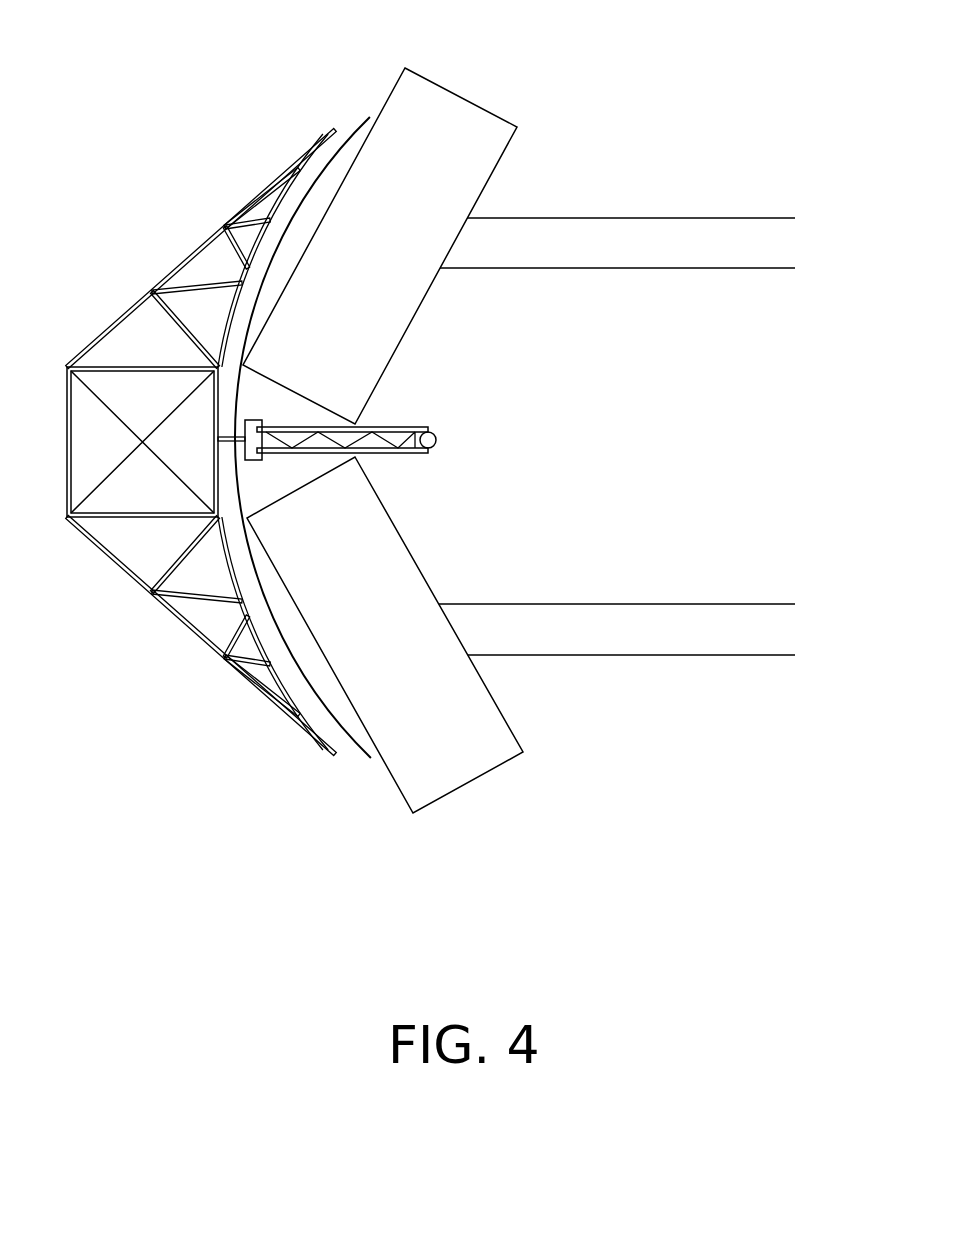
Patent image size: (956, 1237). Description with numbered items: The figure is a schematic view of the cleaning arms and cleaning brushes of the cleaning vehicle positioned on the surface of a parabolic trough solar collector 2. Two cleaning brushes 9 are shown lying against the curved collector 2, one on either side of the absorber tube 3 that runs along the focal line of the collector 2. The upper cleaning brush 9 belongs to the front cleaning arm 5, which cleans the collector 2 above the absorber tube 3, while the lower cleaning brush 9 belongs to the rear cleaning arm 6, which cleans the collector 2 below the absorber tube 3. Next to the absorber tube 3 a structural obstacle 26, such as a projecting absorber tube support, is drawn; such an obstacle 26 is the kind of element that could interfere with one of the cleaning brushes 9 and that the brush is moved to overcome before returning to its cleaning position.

The parabolic trough solar collector 2 is at (315, 173).
The cleaning brush 9 is at (473, 130).
The front cleaning arm 5 is at (643, 239).
The rear cleaning arm 6 is at (682, 641).
The obstacle 26 is at (403, 432).
The absorber tube 3 is at (436, 441).